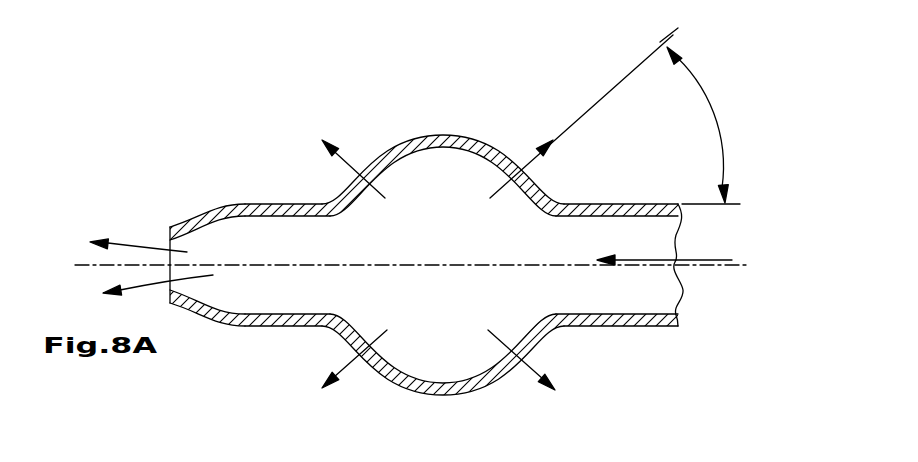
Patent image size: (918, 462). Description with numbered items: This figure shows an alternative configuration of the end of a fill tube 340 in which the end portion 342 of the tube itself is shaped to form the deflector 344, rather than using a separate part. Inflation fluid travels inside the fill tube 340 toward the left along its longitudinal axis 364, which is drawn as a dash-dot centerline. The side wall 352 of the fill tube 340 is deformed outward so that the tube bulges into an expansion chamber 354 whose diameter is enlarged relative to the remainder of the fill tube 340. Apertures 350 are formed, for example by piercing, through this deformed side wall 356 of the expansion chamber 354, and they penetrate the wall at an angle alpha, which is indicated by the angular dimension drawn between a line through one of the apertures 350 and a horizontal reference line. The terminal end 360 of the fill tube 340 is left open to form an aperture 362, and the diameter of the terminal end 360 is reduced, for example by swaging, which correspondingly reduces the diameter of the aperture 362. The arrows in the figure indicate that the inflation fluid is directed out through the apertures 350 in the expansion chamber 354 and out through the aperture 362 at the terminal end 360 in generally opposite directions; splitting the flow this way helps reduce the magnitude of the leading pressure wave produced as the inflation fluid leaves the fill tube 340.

The fill tube 340 is at (459, 230).
The end portion 342 is at (267, 182).
The deflector 344 is at (258, 343).
The apertures 350 is at (357, 170).
The side wall 352 is at (620, 325).
The expansion chamber 354 is at (440, 340).
The deformed side wall 356 is at (453, 138).
The terminal end 360 is at (183, 228).
The aperture 362 is at (170, 250).
The longitudinal axis 364 is at (743, 267).